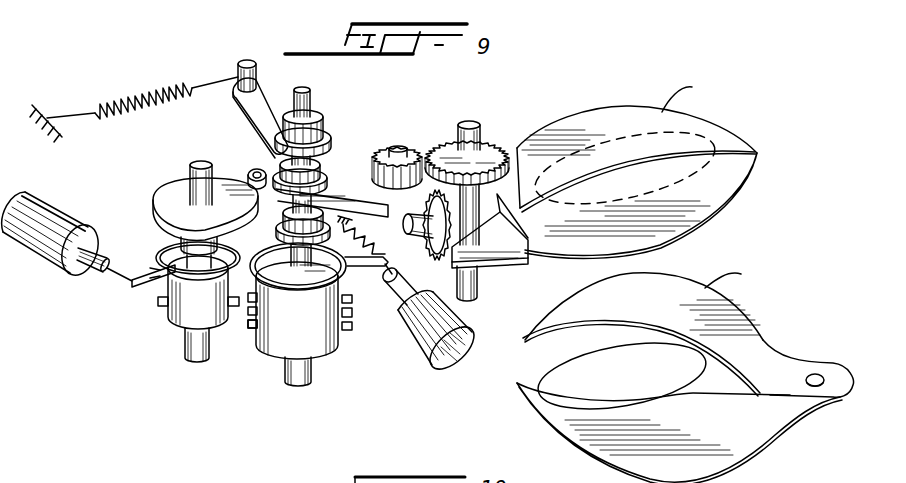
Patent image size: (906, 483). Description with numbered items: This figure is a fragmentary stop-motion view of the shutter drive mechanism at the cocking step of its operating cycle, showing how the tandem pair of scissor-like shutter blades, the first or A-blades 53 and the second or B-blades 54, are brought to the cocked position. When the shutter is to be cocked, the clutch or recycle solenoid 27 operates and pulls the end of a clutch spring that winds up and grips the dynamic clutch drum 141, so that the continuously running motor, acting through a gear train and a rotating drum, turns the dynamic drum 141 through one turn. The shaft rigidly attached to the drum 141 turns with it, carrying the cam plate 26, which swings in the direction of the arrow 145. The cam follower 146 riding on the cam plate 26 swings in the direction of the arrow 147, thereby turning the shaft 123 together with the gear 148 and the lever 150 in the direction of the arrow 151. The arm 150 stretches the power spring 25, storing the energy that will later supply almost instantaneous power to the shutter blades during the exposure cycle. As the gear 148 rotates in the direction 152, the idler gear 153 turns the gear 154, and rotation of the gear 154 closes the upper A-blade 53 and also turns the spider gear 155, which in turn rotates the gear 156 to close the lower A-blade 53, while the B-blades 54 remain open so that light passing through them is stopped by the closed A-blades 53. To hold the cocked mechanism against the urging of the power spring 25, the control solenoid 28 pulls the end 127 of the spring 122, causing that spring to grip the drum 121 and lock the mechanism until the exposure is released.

The power spring 25 is at (133, 97).
The cam plate 26 is at (165, 193).
The clutch or recycle solenoid 27 is at (57, 208).
The control solenoid 28 is at (450, 368).
The A-blades 53 is at (643, 139).
The B-blades 54 is at (670, 315).
The drum 121 is at (300, 314).
The spring 122 is at (253, 324).
The shaft 123 is at (316, 111).
The end of spring 127 is at (380, 266).
The dynamic clutch drum 141 is at (195, 302).
The arrow 145 is at (215, 162).
The cam follower 146 is at (266, 160).
The arrow 147 is at (291, 93).
The gear 148 is at (330, 168).
The lever 150 is at (258, 84).
The arrow 151 is at (252, 55).
The direction of rotation 152 is at (332, 194).
The idler gear 153 is at (410, 143).
The gear 154 is at (488, 140).
The spider gear 155 is at (422, 245).
The gear 156 is at (452, 257).